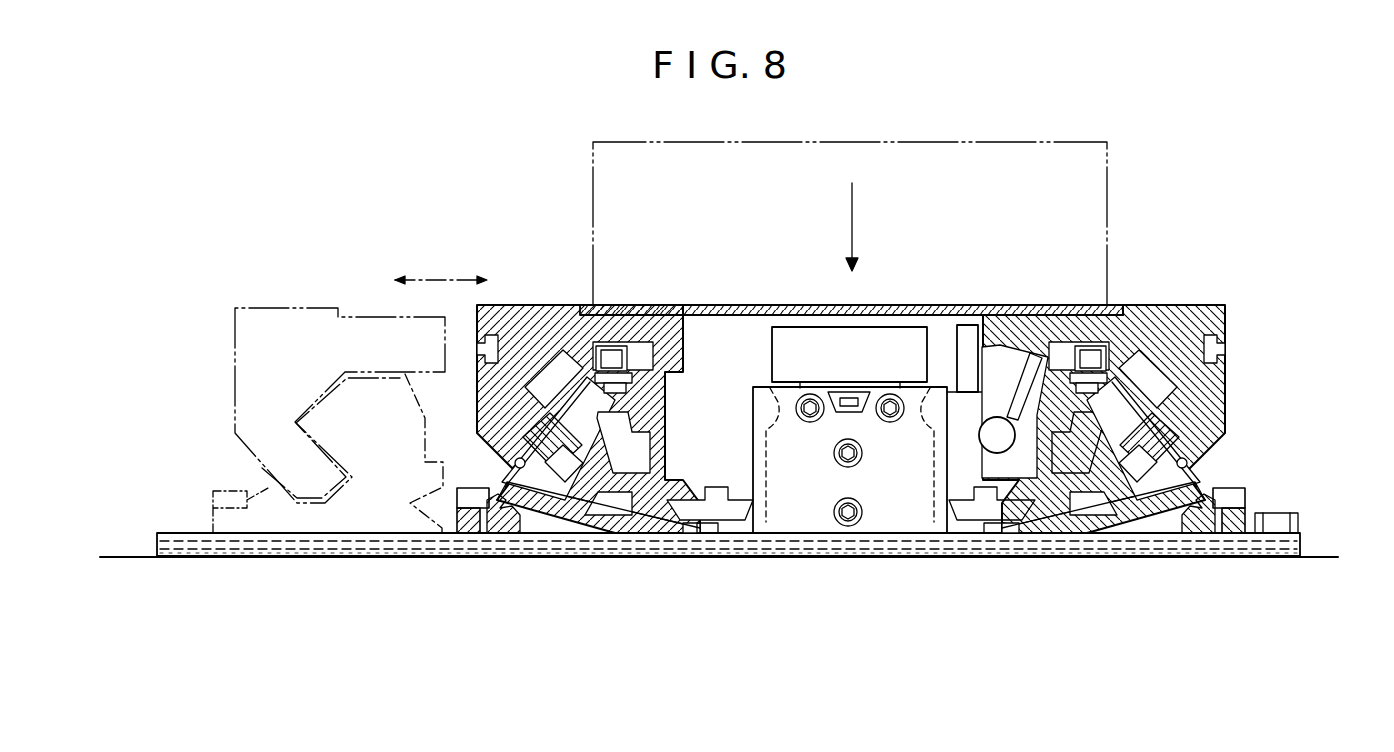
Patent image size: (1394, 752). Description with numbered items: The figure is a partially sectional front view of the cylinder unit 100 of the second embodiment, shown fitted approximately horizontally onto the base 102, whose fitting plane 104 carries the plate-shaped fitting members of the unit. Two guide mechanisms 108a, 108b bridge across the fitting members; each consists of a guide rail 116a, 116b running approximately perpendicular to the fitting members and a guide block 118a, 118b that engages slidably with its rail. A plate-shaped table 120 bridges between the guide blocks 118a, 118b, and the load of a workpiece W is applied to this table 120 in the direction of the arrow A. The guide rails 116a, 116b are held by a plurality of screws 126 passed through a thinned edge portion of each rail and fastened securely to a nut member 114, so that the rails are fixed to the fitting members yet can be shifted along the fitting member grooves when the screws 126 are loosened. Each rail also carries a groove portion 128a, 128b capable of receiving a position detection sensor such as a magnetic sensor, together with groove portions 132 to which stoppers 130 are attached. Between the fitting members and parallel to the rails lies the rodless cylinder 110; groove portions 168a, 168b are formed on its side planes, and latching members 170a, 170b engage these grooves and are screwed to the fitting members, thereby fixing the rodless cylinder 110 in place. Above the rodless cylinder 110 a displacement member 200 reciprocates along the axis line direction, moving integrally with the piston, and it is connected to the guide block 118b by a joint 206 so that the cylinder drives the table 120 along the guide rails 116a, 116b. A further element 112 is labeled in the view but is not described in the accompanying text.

The cylinder unit 100 is at (1200, 112).
The base 102 is at (1313, 536).
The fitting plane 104 is at (1327, 556).
The guide mechanism 108a is at (642, 412).
The guide mechanism 108b is at (1107, 446).
The rodless cylinder 110 is at (846, 547).
The linear guide 112 is at (346, 548).
The nut member 114 is at (462, 548).
The guide rail 116a is at (290, 512).
The guide rail 116b is at (1193, 523).
The guide block 118a is at (257, 305).
The guide block 118b is at (1216, 341).
The table 120 is at (735, 305).
The screws 126 is at (228, 491).
The groove portion 128a is at (518, 515).
The groove portion 128b is at (1192, 510).
The stoppers 130 is at (1000, 463).
The groove portions 132 is at (727, 408).
The groove portion 168a is at (782, 548).
The groove portion 168b is at (908, 545).
The latching member 170a is at (710, 538).
The latching member 170b is at (975, 538).
The displacement member 200 is at (815, 345).
The joint 206 is at (965, 350).
The workpiece W is at (1025, 142).
The arrow A is at (859, 227).